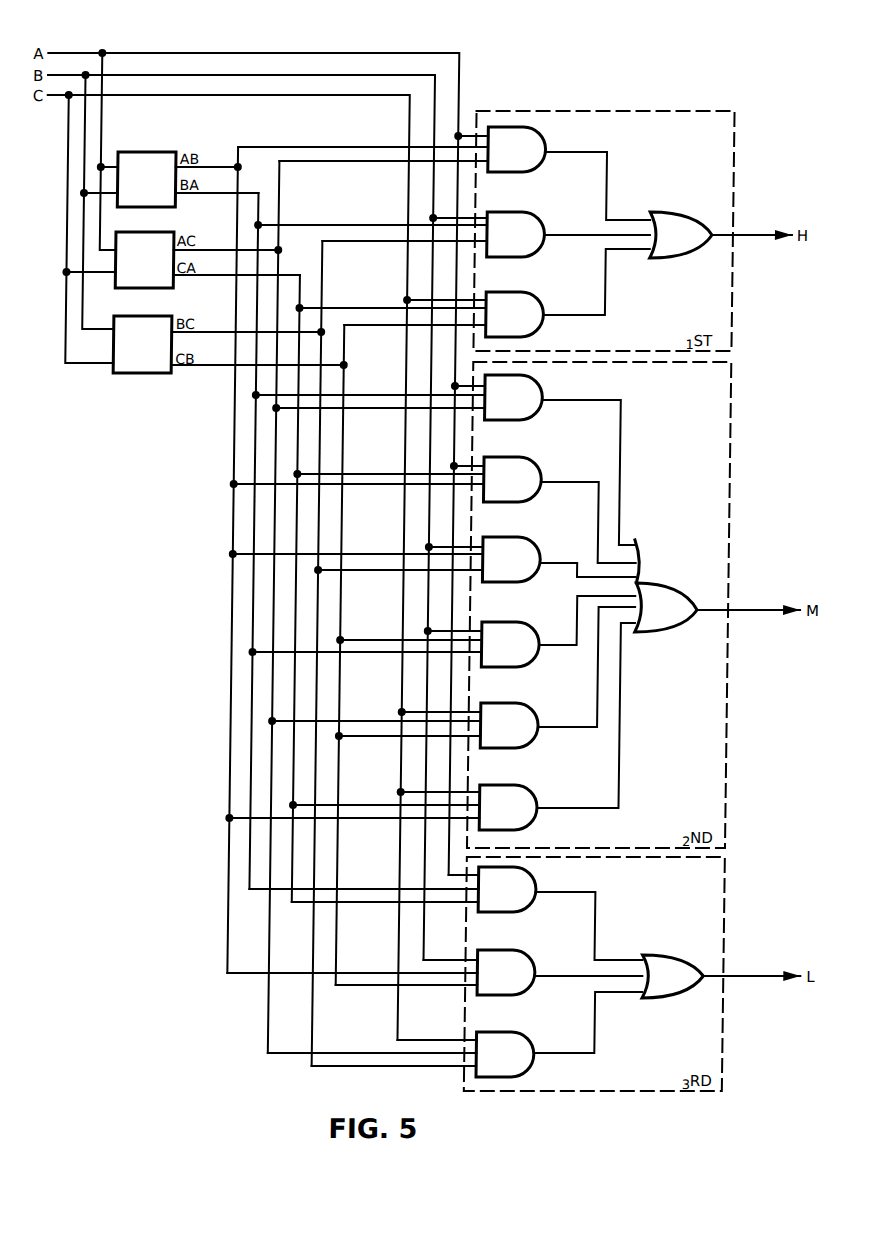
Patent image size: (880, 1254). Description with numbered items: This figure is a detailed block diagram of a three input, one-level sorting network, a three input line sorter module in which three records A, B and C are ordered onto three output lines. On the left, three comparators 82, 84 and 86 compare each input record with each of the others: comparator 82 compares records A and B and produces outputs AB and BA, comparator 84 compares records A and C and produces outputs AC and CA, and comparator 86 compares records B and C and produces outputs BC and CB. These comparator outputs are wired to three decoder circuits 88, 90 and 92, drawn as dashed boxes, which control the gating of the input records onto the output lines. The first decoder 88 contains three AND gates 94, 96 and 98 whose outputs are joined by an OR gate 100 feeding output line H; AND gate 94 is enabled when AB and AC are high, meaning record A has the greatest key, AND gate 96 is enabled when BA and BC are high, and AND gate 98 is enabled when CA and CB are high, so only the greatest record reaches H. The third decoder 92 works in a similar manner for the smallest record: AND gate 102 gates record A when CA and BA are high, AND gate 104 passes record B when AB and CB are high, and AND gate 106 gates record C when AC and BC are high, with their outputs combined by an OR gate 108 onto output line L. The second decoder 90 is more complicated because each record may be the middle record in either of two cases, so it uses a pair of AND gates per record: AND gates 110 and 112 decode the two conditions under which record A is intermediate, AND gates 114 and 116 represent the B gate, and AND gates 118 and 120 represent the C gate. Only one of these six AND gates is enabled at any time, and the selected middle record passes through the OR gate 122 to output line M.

The comparator 82 is at (138, 152).
The comparator 84 is at (156, 243).
The comparator 86 is at (143, 363).
The decoder circuit 88 is at (646, 108).
The decoder circuit 90 is at (721, 411).
The decoder circuit 92 is at (718, 891).
The AND gate 94 is at (532, 146).
The AND gate 96 is at (530, 225).
The AND gate 98 is at (522, 307).
The OR gate 100 is at (676, 225).
The AND gate 102 is at (527, 895).
The AND gate 104 is at (520, 985).
The AND gate 106 is at (524, 1057).
The OR gate 108 is at (670, 973).
The AND gate 110 is at (527, 396).
The AND gate 112 is at (519, 478).
The AND gate 114 is at (519, 552).
The AND gate 116 is at (515, 638).
The AND gate 118 is at (531, 723).
The AND gate 120 is at (532, 808).
The OR gate 122 is at (665, 605).